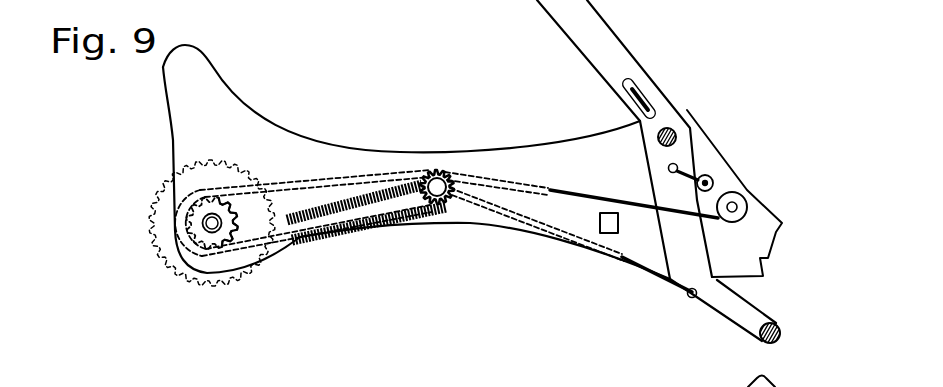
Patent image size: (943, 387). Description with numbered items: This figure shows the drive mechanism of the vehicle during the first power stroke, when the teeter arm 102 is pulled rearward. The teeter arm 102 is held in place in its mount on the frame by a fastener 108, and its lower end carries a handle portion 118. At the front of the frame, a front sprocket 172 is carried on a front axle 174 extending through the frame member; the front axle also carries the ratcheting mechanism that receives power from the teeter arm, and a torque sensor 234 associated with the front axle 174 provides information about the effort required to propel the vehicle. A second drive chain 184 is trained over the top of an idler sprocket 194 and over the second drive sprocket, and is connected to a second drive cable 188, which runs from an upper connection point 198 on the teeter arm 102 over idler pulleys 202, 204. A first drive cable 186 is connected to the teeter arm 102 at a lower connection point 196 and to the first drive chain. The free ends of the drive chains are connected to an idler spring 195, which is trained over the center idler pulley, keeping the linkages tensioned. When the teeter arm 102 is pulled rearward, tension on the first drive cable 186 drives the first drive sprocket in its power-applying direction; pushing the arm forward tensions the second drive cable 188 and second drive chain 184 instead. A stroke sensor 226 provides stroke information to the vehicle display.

The teeter arm 102 is at (623, 52).
The fastener 108 is at (678, 128).
The handle grip 118 is at (770, 322).
The front sprocket 172 is at (212, 290).
The front axle 174 is at (213, 226).
The second drive chain 184 is at (470, 170).
The first drive cable 186 is at (662, 278).
The second drive cable 188 is at (602, 178).
The idler sprocket 194 is at (440, 206).
The idler spring 195 is at (327, 245).
The lower connection point 196 is at (690, 298).
The upper connection point 198 is at (677, 165).
The idler pulley 202 is at (710, 177).
The idler pulley 204 is at (750, 210).
The stroke sensor 226 is at (606, 234).
The torque sensor 234 is at (213, 224).